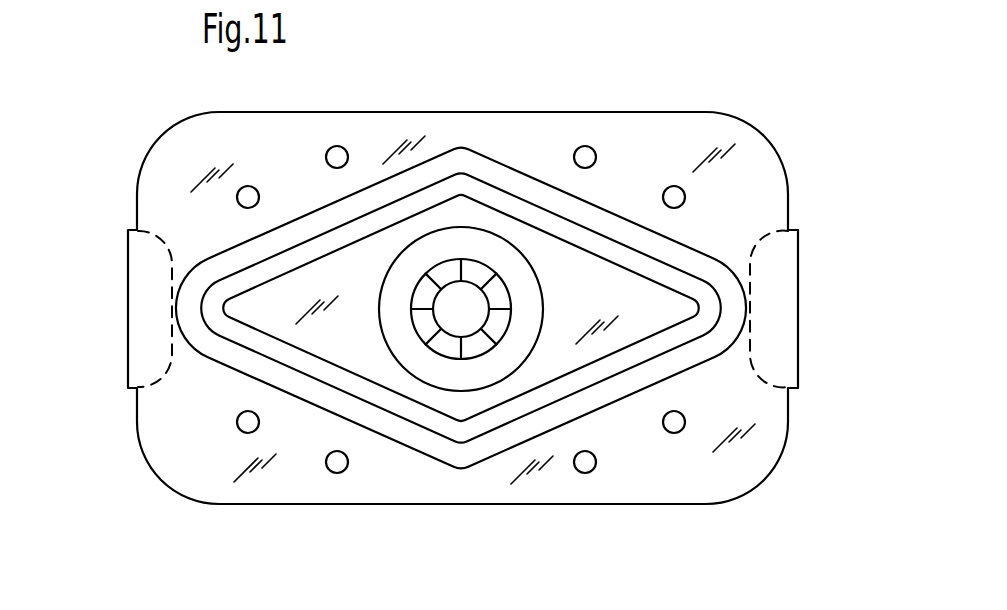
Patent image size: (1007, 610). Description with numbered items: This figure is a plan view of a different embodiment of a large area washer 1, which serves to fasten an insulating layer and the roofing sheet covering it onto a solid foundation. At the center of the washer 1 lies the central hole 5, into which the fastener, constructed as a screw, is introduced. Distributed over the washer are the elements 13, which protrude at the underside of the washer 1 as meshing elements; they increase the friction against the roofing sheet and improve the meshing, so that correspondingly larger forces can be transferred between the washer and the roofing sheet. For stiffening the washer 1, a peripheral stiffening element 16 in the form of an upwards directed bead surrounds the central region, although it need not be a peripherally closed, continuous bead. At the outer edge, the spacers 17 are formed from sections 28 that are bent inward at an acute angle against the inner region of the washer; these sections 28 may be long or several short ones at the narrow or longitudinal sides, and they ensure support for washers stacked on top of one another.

The large area washer 1 is at (793, 138).
The central hole 5 is at (462, 302).
The elements 13 is at (248, 197).
The peripheral stiffening element 16 is at (617, 393).
The spacers 17 is at (146, 300).
The sections 28 is at (777, 335).